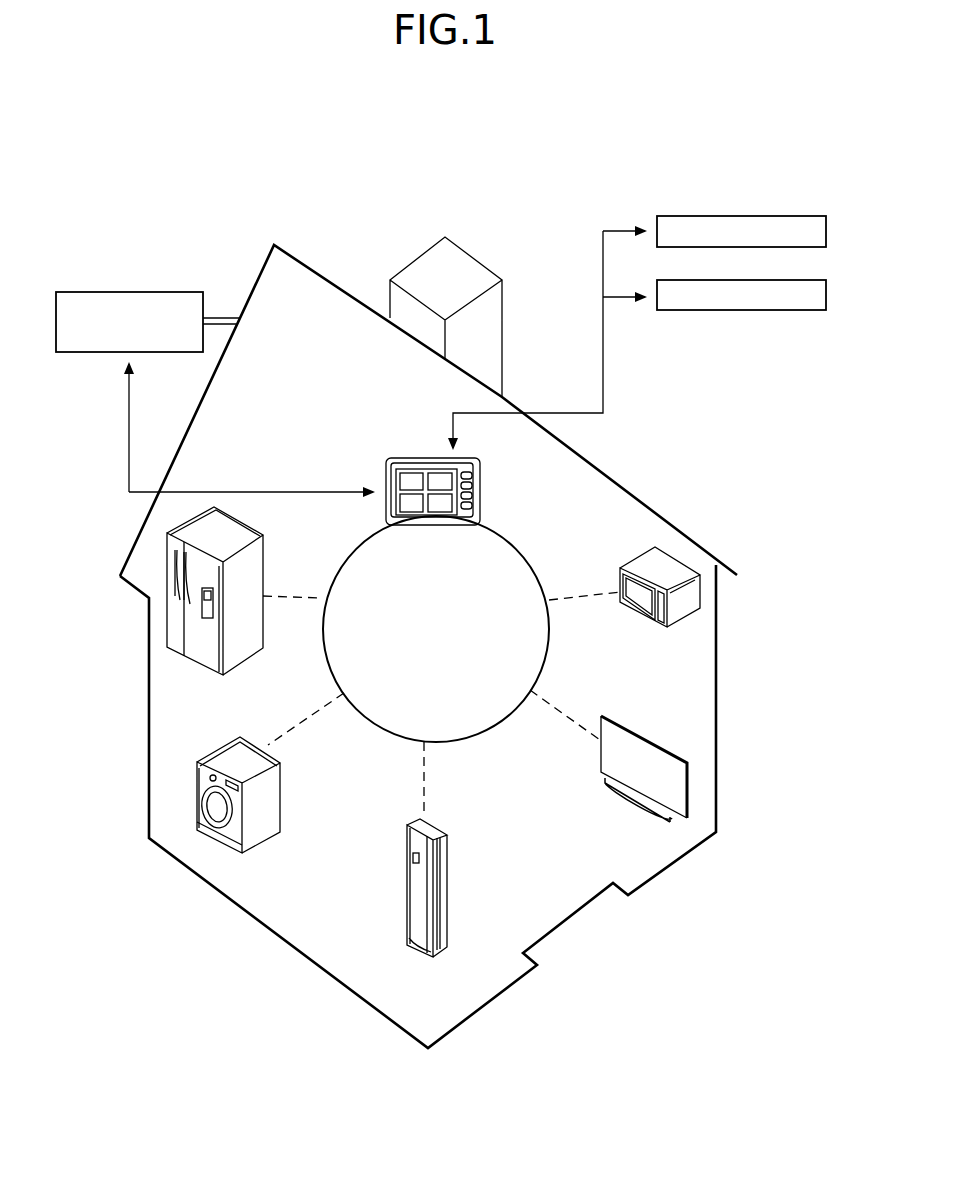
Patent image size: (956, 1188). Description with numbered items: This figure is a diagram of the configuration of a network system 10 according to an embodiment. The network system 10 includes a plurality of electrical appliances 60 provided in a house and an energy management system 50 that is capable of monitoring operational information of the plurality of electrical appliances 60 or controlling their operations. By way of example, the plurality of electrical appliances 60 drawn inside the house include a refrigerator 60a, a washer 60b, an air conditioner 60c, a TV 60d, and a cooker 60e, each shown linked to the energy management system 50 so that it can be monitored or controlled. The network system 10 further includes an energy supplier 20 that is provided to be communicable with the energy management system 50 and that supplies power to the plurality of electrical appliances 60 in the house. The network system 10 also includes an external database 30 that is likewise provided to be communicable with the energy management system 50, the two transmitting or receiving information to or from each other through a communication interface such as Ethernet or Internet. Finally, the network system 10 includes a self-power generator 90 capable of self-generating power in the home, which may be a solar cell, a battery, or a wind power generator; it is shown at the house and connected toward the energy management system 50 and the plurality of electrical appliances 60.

The network system 10 is at (284, 172).
The energy supplier 20 is at (827, 232).
The external database 30 is at (827, 296).
The energy management system 50 is at (371, 440).
The electrical appliances 60 is at (153, 548).
The refrigerator 60a is at (168, 583).
The washer 60b is at (221, 838).
The air conditioner 60c is at (440, 928).
The TV 60d is at (688, 783).
The cooker 60e is at (668, 560).
The self-power generator 90 is at (140, 291).